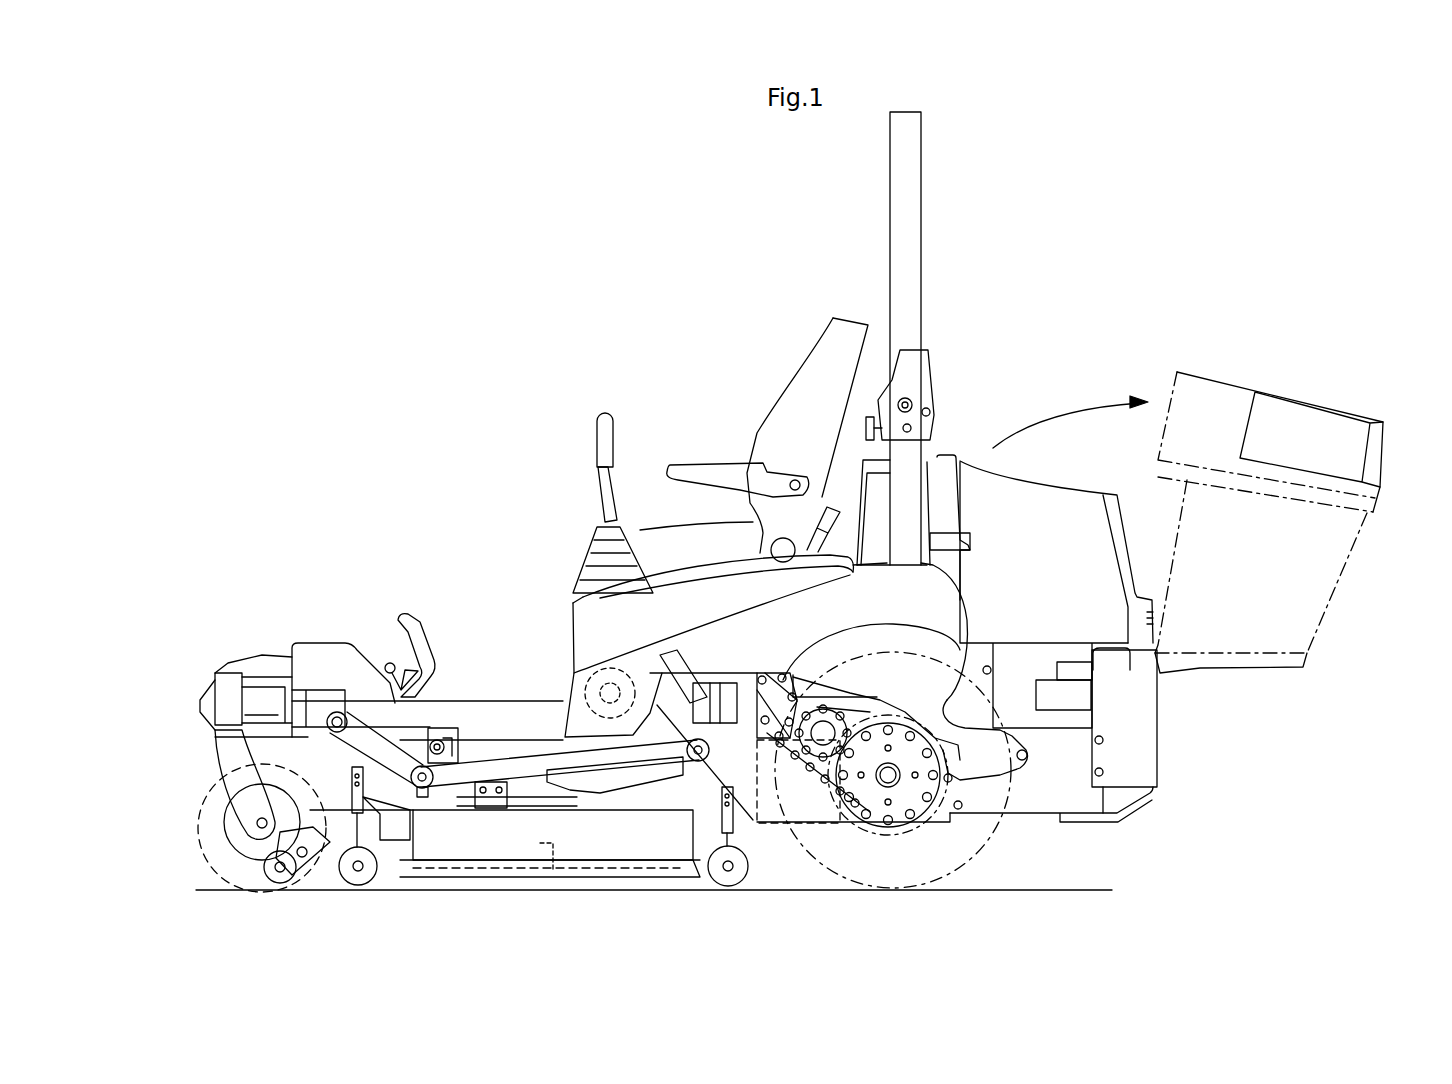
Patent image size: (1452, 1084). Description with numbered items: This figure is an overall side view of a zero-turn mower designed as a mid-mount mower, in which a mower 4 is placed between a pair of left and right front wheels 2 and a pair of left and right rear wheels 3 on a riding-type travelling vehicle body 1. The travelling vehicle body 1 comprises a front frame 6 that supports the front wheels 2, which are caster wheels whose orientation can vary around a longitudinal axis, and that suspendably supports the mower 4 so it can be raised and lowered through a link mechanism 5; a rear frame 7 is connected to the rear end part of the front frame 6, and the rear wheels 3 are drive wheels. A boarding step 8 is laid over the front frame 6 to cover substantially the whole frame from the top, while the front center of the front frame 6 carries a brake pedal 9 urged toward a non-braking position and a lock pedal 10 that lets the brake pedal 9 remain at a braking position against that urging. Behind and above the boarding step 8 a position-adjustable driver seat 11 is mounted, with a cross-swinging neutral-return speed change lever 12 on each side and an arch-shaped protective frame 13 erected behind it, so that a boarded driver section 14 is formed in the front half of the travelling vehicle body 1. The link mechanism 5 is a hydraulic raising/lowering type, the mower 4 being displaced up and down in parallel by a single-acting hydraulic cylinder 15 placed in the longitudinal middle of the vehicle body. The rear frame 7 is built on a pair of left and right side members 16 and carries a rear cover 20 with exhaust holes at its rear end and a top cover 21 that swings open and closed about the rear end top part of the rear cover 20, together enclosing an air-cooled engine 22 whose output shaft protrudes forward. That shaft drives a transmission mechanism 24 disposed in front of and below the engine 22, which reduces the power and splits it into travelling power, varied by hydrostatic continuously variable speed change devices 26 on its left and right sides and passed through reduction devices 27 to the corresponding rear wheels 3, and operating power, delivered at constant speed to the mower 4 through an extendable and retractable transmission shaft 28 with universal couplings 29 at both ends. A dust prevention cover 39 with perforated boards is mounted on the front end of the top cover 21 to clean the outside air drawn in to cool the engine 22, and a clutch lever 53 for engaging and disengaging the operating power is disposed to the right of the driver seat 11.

The travelling vehicle body 1 is at (275, 580).
The front wheels 2 is at (249, 872).
The rear wheels 3 is at (976, 860).
The mower 4 is at (612, 878).
The link mechanism 5 is at (522, 750).
The front frame 6 is at (478, 702).
The rear frame 7 is at (1025, 815).
The boarding step 8 is at (453, 700).
The brake pedal 9 is at (410, 616).
The lock pedal 10 is at (388, 664).
The driver seat 11 is at (770, 417).
The speed change lever 12 is at (595, 448).
The protective frame 13 is at (905, 218).
The driver section 14 is at (463, 492).
The hydraulic cylinder 15 is at (713, 682).
The side members 16 is at (967, 833).
The rear cover 20 is at (1157, 736).
The top cover 21 is at (1047, 480).
The engine 22 is at (1030, 659).
The transmission mechanism 24 is at (798, 815).
The hydrostatic continuously variable speed change devices 26 is at (766, 685).
The reduction devices 27 is at (813, 767).
The transmission shaft 28 is at (617, 770).
The universal couplings 29 is at (577, 780).
The dust prevention cover 39 is at (930, 457).
The clutch lever 53 is at (833, 503).